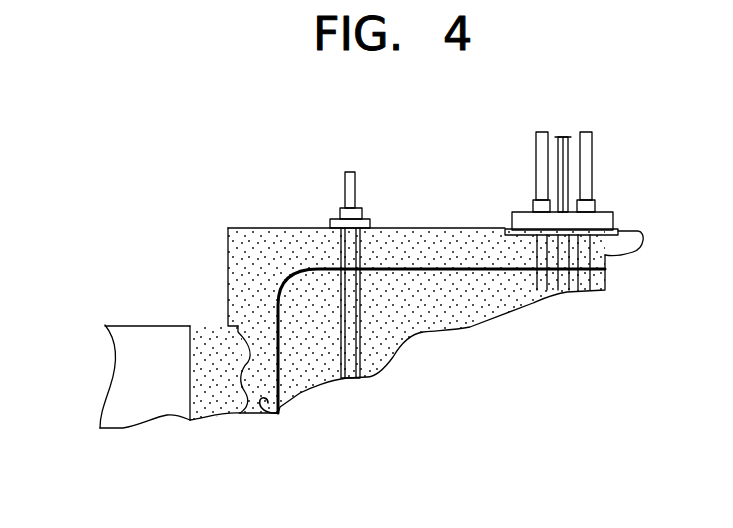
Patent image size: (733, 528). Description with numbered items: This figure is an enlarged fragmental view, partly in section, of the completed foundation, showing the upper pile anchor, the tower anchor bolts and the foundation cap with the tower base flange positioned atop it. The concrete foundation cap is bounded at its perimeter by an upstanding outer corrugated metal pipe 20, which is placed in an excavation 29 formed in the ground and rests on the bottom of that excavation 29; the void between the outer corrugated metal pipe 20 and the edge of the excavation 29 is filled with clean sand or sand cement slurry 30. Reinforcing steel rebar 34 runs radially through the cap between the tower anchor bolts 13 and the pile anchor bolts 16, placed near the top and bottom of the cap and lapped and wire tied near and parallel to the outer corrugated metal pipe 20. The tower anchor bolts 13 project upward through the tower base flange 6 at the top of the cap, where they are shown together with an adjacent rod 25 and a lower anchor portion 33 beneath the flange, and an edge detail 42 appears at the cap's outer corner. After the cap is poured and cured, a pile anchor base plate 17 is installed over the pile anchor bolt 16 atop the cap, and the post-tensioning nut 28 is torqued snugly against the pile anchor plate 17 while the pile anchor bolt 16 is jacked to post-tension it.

The base plate 6 is at (530, 207).
The tower anchor bolts 13 is at (536, 172).
The pile anchor bolts 16 is at (352, 172).
The pile anchor base plates 17 is at (330, 221).
The outer corrugated metal pipe 20 is at (268, 413).
The rod 25 is at (563, 137).
The post-tensioning nuts 28 is at (340, 214).
The excavation 29 is at (190, 372).
The sand or sand cement slurry 30 is at (205, 402).
The anchor sleeve 33 is at (561, 236).
The reinforcing steel rebar 34 is at (444, 270).
The drip edge 42 is at (606, 256).